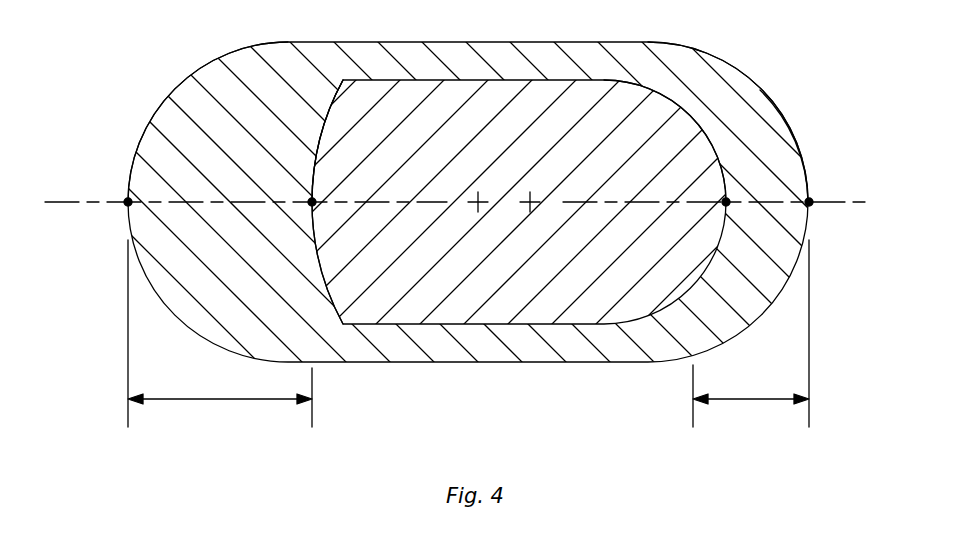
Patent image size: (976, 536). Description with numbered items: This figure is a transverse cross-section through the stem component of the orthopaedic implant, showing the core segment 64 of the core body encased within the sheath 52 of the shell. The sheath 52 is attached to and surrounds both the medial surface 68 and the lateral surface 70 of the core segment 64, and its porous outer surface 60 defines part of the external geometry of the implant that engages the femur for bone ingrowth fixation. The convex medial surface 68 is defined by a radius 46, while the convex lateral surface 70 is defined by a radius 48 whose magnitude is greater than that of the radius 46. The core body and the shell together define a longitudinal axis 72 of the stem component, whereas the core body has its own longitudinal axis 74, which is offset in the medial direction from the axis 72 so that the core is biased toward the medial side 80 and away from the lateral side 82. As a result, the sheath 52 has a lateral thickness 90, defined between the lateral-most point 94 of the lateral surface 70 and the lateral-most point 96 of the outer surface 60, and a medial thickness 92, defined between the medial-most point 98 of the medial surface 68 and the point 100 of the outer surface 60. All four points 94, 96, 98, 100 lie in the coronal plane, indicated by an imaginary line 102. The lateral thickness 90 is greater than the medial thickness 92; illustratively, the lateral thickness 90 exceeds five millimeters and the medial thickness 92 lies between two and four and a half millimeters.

The radius 46 is at (697, 120).
The radius 48 is at (316, 145).
The sheath 52 is at (785, 130).
The outer surface 60 is at (144, 135).
The core segment 64 is at (630, 98).
The medial surface 68 is at (716, 140).
The lateral surface 70 is at (320, 126).
The longitudinal axis 72 is at (489, 190).
The longitudinal axis 74 is at (532, 190).
The medial side 80 is at (858, 246).
The lateral side 82 is at (115, 228).
The lateral thickness 90 is at (219, 402).
The medial thickness 92 is at (748, 402).
The lateral-most point 94 is at (315, 201).
The lateral-most point 96 is at (127, 201).
The medial-most point 98 is at (806, 168).
The lateral-most point 100 is at (811, 200).
The imaginary line 102 is at (64, 200).